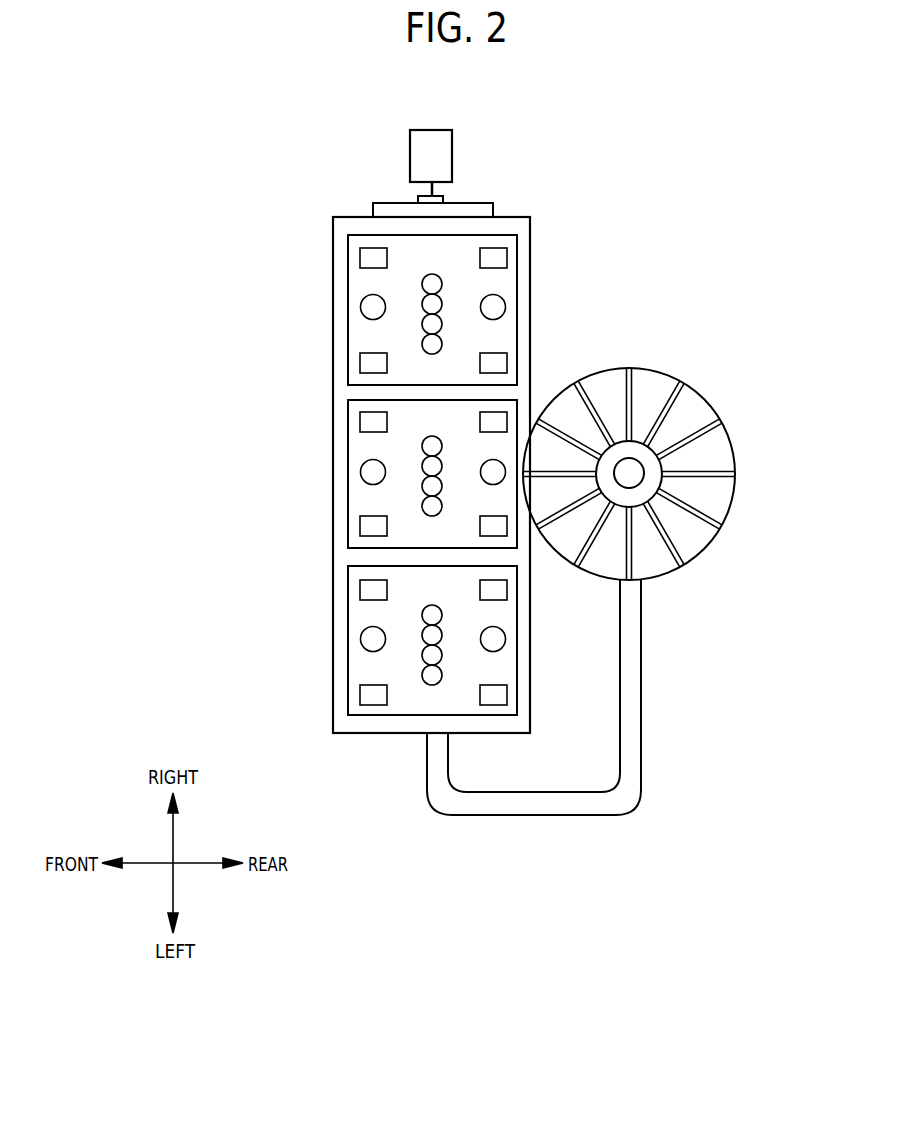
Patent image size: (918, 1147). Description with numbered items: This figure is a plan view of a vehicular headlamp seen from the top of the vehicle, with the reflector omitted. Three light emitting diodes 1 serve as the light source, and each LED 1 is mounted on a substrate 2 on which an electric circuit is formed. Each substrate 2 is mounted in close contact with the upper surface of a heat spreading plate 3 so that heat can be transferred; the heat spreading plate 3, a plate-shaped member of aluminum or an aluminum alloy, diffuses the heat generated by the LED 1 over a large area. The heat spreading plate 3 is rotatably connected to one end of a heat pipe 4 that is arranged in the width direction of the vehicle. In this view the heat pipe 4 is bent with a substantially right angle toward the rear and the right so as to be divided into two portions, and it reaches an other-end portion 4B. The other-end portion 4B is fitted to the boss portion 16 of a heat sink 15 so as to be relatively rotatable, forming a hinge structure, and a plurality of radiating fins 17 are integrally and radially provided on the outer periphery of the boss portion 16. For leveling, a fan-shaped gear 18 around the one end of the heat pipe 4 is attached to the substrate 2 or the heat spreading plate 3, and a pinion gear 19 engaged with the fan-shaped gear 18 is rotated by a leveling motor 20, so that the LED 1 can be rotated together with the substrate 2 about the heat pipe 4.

The light emitting diode 1 is at (422, 321).
The substrate 2 is at (355, 278).
The heat spreading plate 3 is at (531, 233).
The heat pipe 4 is at (645, 733).
The other-end portion 4B is at (637, 472).
The heat sink 15 is at (670, 441).
The boss portion 16 is at (632, 450).
The radiating fins 17 is at (727, 515).
The fan-shaped gear 18 is at (385, 203).
The pinion gear 19 is at (437, 197).
The leveling motor 20 is at (434, 141).